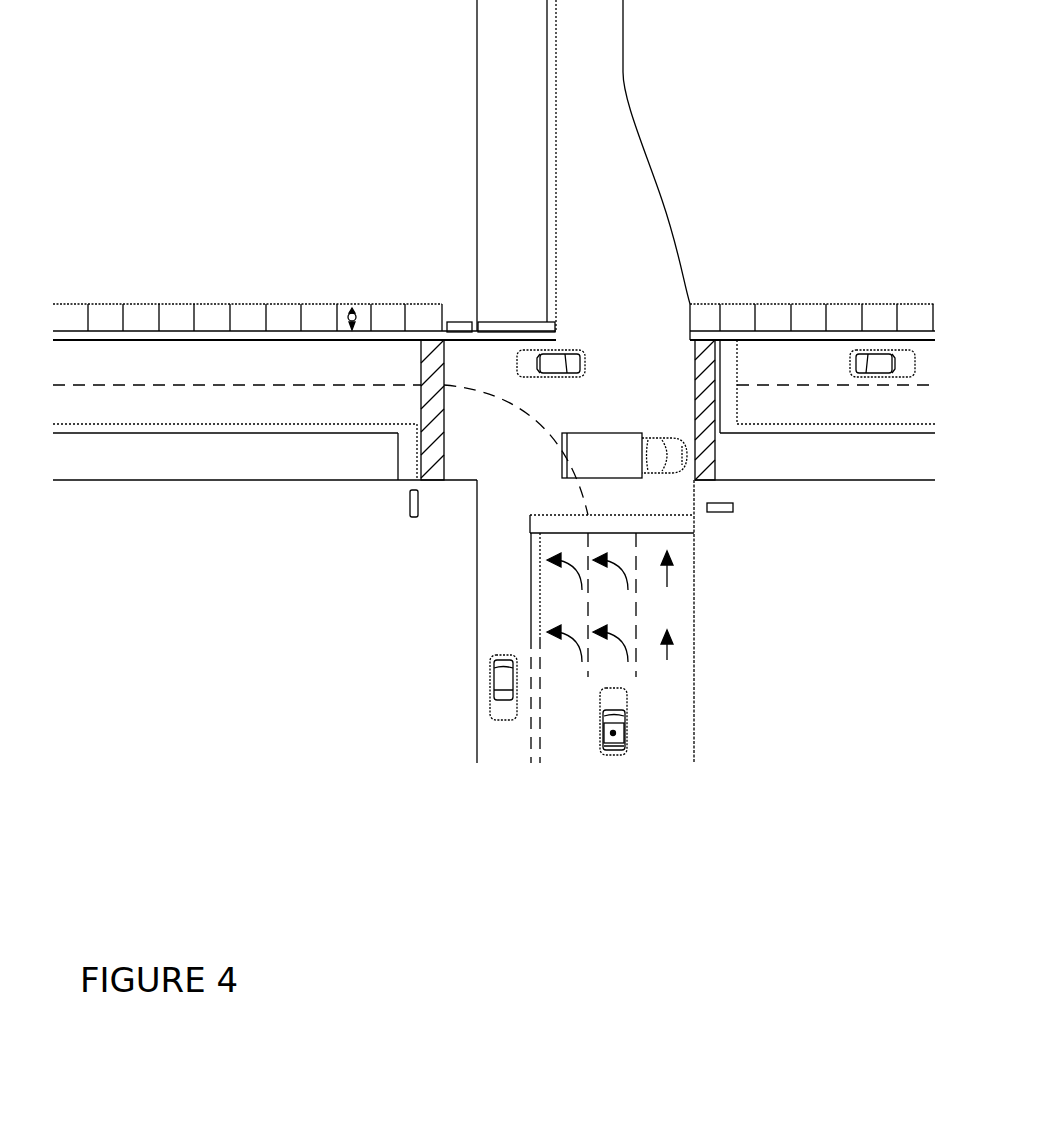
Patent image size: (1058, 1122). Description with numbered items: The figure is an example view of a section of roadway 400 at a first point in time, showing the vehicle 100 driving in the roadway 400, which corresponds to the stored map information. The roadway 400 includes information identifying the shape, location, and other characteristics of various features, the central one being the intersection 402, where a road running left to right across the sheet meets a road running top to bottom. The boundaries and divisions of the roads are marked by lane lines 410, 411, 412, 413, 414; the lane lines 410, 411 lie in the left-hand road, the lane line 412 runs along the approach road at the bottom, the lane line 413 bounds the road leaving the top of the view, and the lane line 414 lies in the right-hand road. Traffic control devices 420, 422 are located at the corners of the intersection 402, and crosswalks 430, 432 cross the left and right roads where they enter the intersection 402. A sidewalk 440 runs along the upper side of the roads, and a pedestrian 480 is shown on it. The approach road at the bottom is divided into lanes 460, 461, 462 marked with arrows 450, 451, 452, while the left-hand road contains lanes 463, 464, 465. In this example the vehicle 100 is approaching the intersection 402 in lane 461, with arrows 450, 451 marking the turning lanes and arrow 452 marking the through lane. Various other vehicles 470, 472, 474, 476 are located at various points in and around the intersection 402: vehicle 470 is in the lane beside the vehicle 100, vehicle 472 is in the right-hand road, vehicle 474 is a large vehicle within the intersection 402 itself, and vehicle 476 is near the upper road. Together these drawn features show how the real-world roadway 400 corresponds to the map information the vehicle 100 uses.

The vehicle 100 is at (627, 728).
The roadway 400 is at (178, 937).
The intersection 402 is at (666, 480).
The lane line 410 is at (212, 383).
The lane line 411 is at (282, 423).
The lane line 412 is at (528, 748).
The lane line 413 is at (547, 134).
The lane line 414 is at (828, 423).
The traffic control device 420 is at (733, 510).
The traffic control device 422 is at (457, 320).
The crosswalk 430 is at (420, 350).
The crosswalk 432 is at (716, 345).
The sidewalk 440 is at (813, 304).
The arrow 450 is at (543, 632).
The arrow 451 is at (622, 645).
The arrow 452 is at (672, 657).
The lane 460 is at (566, 605).
The lane 461 is at (614, 605).
The lane 462 is at (665, 587).
The lane 463 is at (358, 408).
The lane 464 is at (360, 358).
The lane 465 is at (265, 470).
The vehicle 470 is at (490, 702).
The vehicle 472 is at (906, 378).
The vehicle 474 is at (617, 480).
The vehicle 476 is at (571, 348).
The pedestrian 480 is at (350, 310).